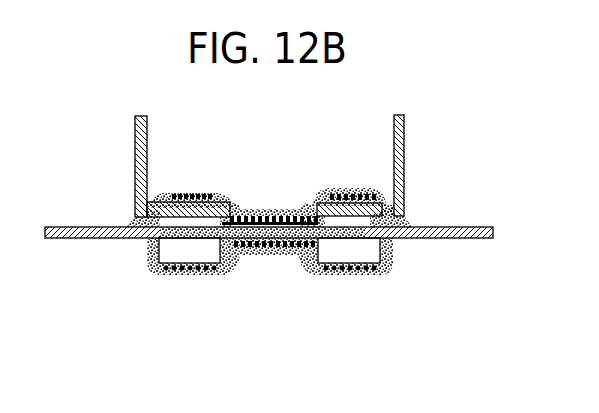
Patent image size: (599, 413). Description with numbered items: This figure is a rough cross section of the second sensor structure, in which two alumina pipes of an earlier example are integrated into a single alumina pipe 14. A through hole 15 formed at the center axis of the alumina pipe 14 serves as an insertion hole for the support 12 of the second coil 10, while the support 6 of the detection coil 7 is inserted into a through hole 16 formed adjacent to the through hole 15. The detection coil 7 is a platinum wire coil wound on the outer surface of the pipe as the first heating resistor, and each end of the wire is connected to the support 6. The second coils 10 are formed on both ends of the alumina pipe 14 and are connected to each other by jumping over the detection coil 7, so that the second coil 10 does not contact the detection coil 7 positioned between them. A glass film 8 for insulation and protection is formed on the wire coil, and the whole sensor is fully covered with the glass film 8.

The support 6 is at (404, 150).
The detection coil 7 is at (275, 211).
The glass film 8 is at (237, 211).
The second coil 10 is at (187, 194).
The support 12 is at (478, 239).
The alumina pipe 14 is at (387, 211).
The through hole 15 is at (349, 237).
The through hole 16 is at (354, 196).